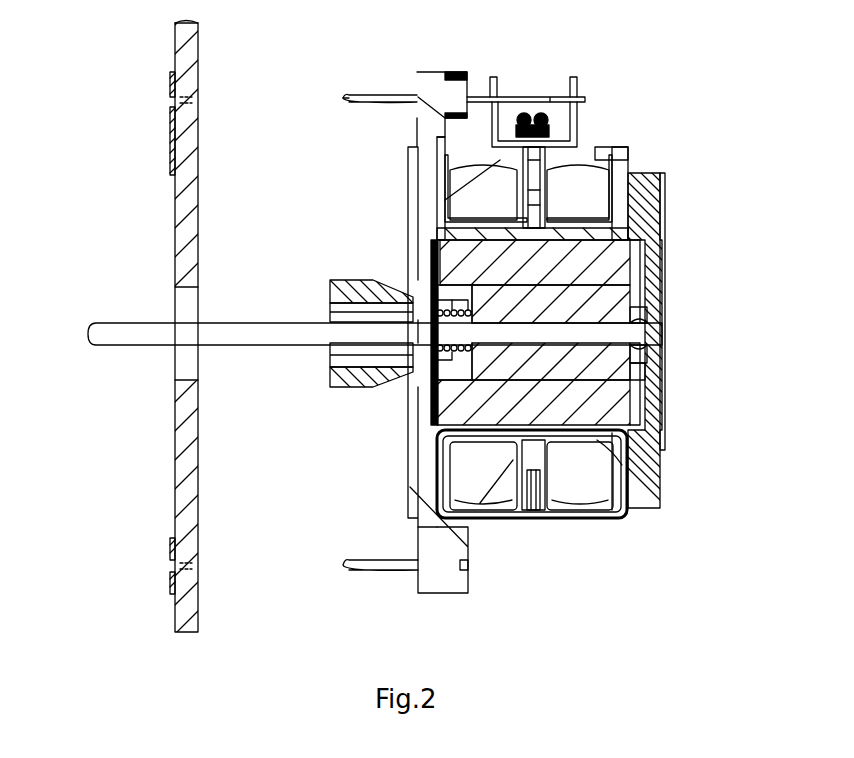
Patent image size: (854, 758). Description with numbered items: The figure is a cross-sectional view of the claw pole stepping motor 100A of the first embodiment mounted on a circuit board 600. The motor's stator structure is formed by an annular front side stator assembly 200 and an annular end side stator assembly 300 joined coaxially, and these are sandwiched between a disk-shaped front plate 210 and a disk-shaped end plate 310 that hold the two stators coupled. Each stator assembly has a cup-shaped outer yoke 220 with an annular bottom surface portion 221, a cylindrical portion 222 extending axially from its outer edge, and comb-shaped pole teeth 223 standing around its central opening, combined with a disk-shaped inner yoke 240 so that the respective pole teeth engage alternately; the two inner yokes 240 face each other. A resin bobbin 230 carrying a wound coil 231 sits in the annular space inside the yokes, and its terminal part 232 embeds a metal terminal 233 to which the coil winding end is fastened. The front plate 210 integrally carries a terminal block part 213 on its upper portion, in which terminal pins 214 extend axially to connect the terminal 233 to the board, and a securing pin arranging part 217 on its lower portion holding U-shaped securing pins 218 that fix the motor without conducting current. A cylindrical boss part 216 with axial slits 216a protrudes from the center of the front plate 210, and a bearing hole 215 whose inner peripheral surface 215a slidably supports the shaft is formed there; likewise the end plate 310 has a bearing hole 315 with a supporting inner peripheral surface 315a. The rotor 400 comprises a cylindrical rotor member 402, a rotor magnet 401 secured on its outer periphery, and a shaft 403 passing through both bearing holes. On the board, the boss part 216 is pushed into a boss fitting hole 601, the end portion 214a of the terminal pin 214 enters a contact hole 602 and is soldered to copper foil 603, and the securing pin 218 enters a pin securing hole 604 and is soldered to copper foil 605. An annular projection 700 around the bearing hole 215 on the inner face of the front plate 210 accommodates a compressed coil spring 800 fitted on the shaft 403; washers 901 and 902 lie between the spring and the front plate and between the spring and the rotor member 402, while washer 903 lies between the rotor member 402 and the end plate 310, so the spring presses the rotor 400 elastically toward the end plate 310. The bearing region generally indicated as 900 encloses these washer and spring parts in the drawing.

The claw pole stepping motor 100A is at (346, 463).
The front side stator assembly 200 is at (493, 522).
The front plate 210 is at (412, 232).
The terminal block part 213 is at (417, 112).
The terminal pin 214 is at (385, 94).
The end portion of the terminal pin 214a is at (352, 96).
The bearing hole 215 is at (350, 378).
The inner peripheral surface 215a is at (334, 291).
The boss part 216 is at (325, 355).
The slits 216a is at (325, 312).
The securing pin arranging part 217 is at (422, 592).
The securing pin 218 is at (378, 572).
The outer yoke 220 is at (441, 165).
The bottom surface portion 221 is at (630, 440).
The cylindrical portion 222 is at (608, 516).
The pole teeth 223 is at (622, 445).
The bobbin 230 is at (446, 188).
The coil 231 is at (483, 185).
The terminal part 232 is at (532, 117).
The terminal 233 is at (494, 76).
The inner yoke 240 is at (440, 222).
The end side stator assembly 300 is at (566, 522).
The end plate 310 is at (650, 212).
The bearing hole 315 is at (652, 320).
The inner peripheral surface 315a is at (652, 336).
The rotor 400 is at (742, 238).
The rotor magnet 401 is at (636, 256).
The rotor member 402 is at (642, 284).
The shaft 403 is at (650, 270).
The circuit board 600 is at (190, 462).
The boss fitting hole 601 is at (188, 365).
The contact hole 602 is at (192, 102).
The copper foil 603 is at (172, 145).
The pin securing hole 604 is at (192, 568).
The copper foil 605 is at (172, 580).
The projection 700 is at (435, 400).
The coil spring 800 is at (437, 342).
The bearing 900 is at (455, 332).
The washer 901 is at (445, 310).
The washer 902 is at (468, 310).
The washer 903 is at (640, 372).